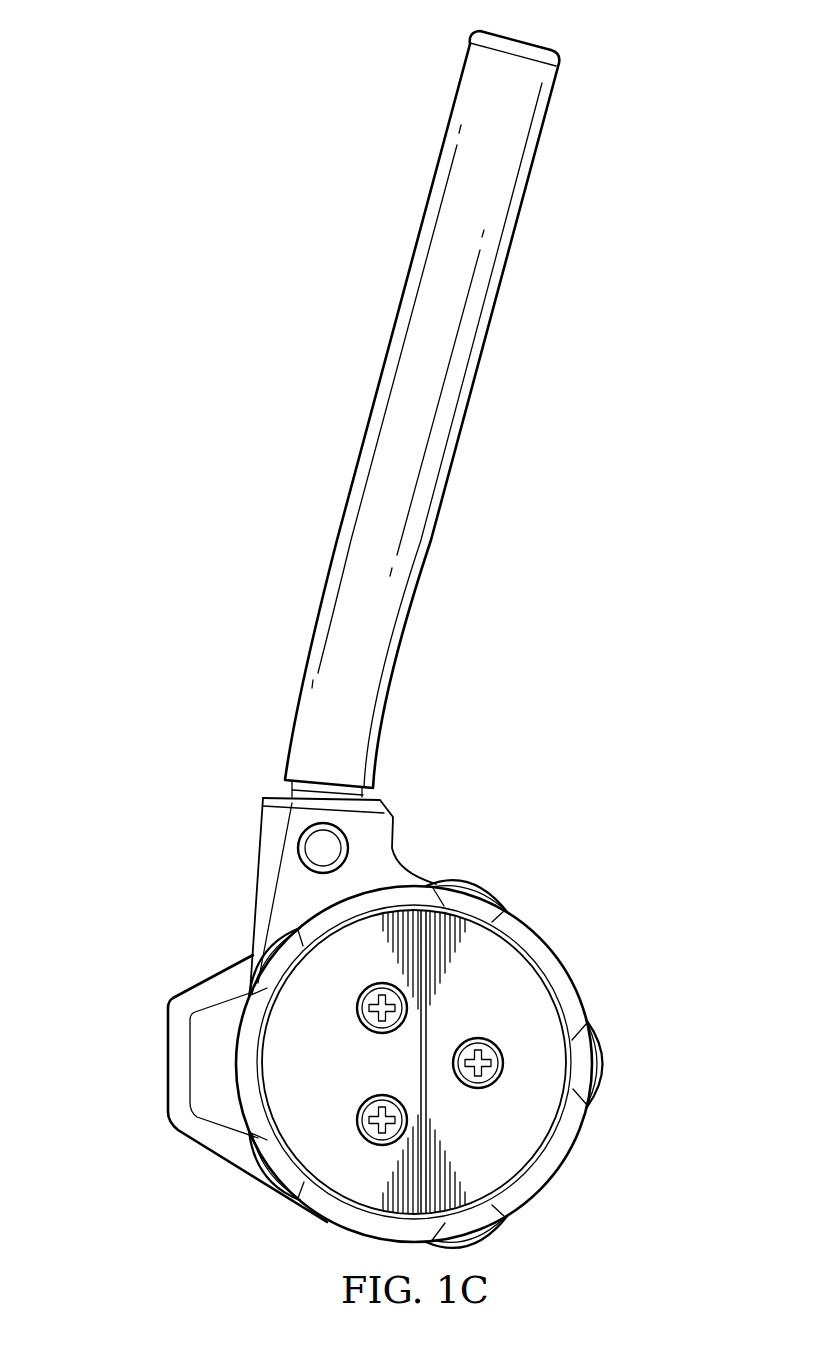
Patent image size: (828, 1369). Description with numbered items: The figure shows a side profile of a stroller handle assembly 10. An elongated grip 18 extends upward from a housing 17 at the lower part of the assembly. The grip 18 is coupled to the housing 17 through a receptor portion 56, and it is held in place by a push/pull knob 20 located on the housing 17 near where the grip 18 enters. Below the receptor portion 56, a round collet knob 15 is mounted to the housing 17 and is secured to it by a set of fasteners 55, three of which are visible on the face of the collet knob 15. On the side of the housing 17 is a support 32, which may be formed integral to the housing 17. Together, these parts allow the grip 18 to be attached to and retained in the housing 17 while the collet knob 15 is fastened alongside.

The stroller handle assembly 10 is at (580, 448).
The collet knob 15 is at (583, 1135).
The housing 17 is at (288, 910).
The grip 18 is at (378, 388).
The push/pull knob 20 is at (315, 848).
The support 32 is at (168, 1063).
The fasteners 55 is at (370, 1022).
The receptor portion 56 is at (331, 890).